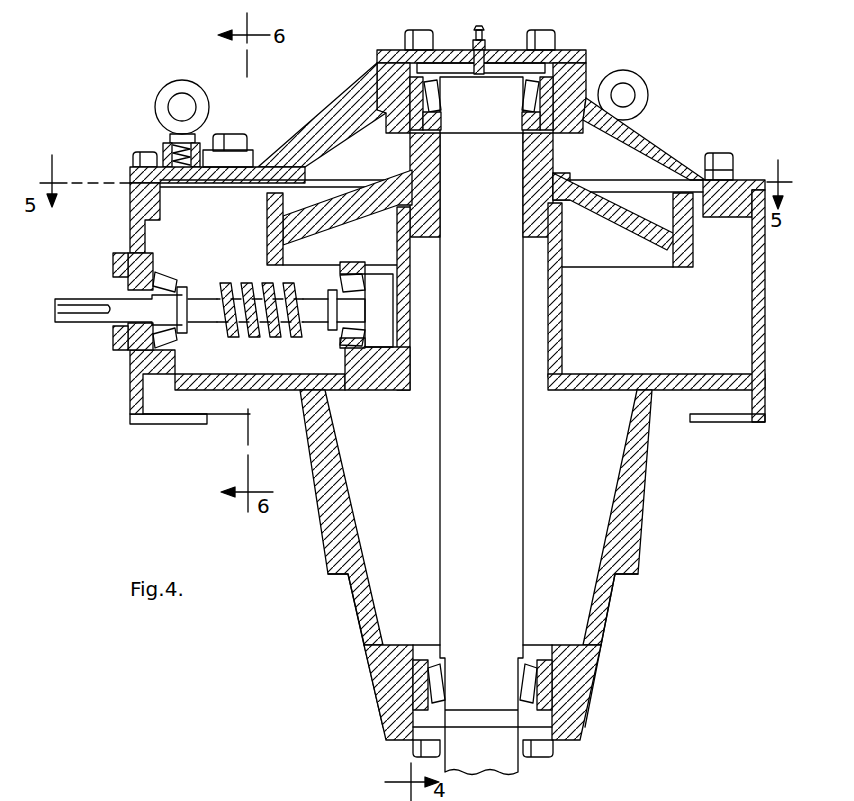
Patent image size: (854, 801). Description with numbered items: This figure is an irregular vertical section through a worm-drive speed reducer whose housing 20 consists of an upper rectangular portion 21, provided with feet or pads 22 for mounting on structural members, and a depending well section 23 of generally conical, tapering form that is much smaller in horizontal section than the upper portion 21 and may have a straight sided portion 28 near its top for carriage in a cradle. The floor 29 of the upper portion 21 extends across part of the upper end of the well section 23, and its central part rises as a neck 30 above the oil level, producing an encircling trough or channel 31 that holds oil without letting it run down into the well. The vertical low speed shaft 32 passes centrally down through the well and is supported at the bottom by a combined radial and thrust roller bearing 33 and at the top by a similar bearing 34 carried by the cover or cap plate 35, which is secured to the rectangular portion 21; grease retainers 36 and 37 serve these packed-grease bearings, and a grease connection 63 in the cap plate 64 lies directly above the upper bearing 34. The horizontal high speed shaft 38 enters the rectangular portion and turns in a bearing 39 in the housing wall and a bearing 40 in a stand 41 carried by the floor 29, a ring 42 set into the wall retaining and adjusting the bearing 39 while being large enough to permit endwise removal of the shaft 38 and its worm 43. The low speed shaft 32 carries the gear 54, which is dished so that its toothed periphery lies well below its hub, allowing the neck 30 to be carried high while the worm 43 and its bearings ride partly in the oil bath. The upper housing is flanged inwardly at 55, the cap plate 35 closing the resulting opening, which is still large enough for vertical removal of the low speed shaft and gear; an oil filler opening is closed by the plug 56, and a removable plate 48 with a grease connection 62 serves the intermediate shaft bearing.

The housing 20 is at (245, 422).
The upper rectangular portion 21 is at (133, 230).
The feet or pads 22 is at (157, 425).
The well section 23 is at (612, 598).
The straight sided portion 28 is at (637, 535).
The floor 29 is at (277, 390).
The neck 30 is at (555, 312).
The encircling trough or channel 31 is at (660, 355).
The low speed shaft 32 is at (495, 497).
The bearing 33 is at (590, 688).
The bearing 34 is at (548, 90).
The cover or cap plate 35 is at (645, 140).
The grease retainer 36 is at (590, 650).
The grease retainer 37 is at (568, 120).
The high speed shaft 38 is at (74, 325).
The bearing 39 is at (143, 262).
The bearing 40 is at (343, 340).
The stand 41 is at (340, 264).
The ring 42 is at (113, 275).
The worm 43 is at (245, 284).
The removable plate 48 is at (448, 770).
The gear 54 is at (268, 210).
The inward flange 55 is at (718, 218).
The plug 56 is at (238, 147).
The grease connection 62 is at (371, 770).
The grease connection 63 is at (476, 40).
The cap plate 64 is at (377, 56).